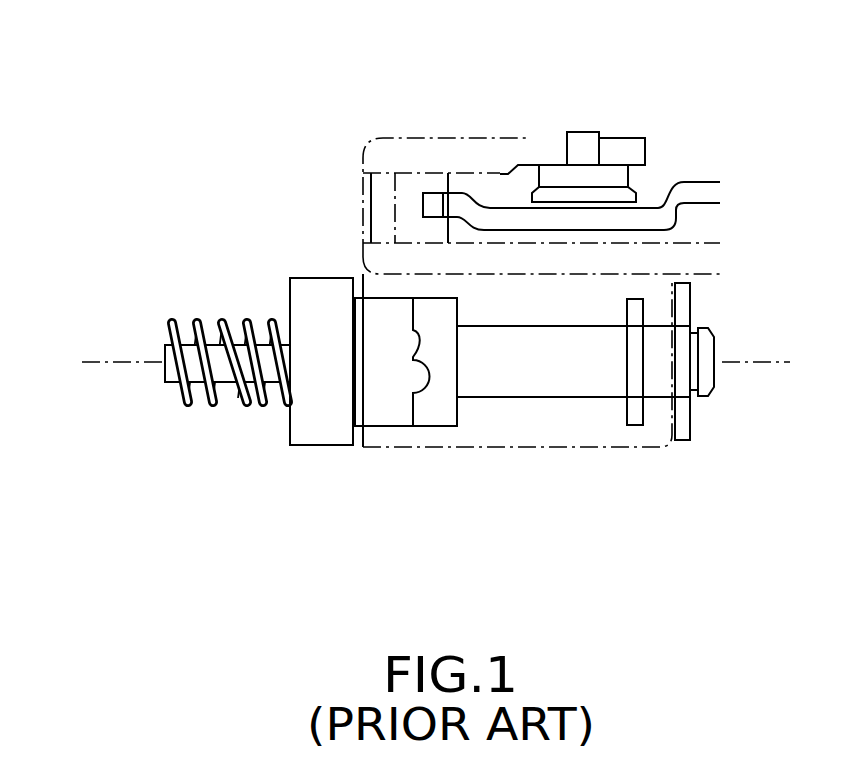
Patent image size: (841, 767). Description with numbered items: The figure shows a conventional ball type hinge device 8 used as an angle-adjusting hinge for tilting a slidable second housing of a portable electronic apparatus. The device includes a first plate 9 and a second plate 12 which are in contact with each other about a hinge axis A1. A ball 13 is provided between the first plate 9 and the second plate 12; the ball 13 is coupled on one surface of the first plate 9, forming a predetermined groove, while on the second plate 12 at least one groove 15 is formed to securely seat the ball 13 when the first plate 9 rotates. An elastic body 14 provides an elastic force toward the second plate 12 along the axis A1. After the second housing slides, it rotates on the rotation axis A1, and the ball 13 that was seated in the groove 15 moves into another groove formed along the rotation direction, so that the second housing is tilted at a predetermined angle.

The ball type hinge device 8 is at (472, 68).
The first plate 9 is at (322, 297).
The second plate 12 is at (443, 400).
The ball 13 is at (417, 347).
The elastic body 14 is at (225, 405).
The groove 15 is at (425, 343).
The hinge axis A1 is at (100, 362).